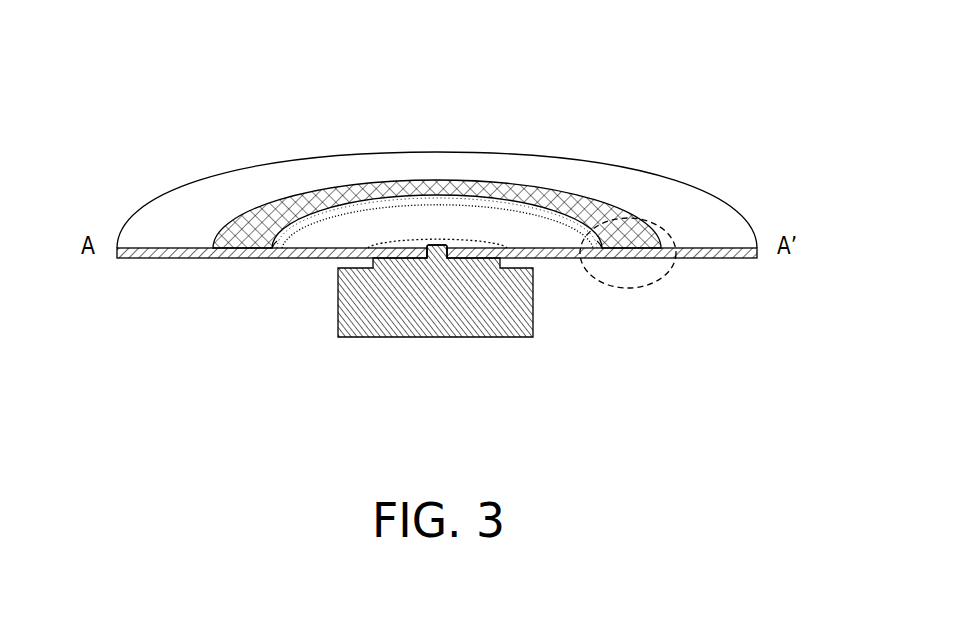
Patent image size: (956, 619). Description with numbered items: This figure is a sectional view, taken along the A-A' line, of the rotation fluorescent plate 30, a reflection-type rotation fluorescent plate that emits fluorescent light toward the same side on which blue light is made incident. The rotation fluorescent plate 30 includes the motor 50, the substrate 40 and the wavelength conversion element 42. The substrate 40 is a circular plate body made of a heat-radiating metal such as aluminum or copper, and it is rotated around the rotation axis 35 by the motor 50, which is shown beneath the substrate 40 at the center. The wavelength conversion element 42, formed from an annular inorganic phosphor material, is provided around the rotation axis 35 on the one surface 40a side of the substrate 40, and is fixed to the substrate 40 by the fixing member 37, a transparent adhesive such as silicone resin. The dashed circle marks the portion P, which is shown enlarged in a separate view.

The rotation fluorescent plate 30 is at (492, 108).
The rotation axis 35 is at (439, 245).
The fixing member 37 is at (278, 244).
The substrate 40 is at (655, 207).
The one surface of the substrate 40a is at (704, 220).
The wavelength conversion element 42 is at (299, 196).
The motor 50 is at (430, 307).
The portion P is at (622, 290).